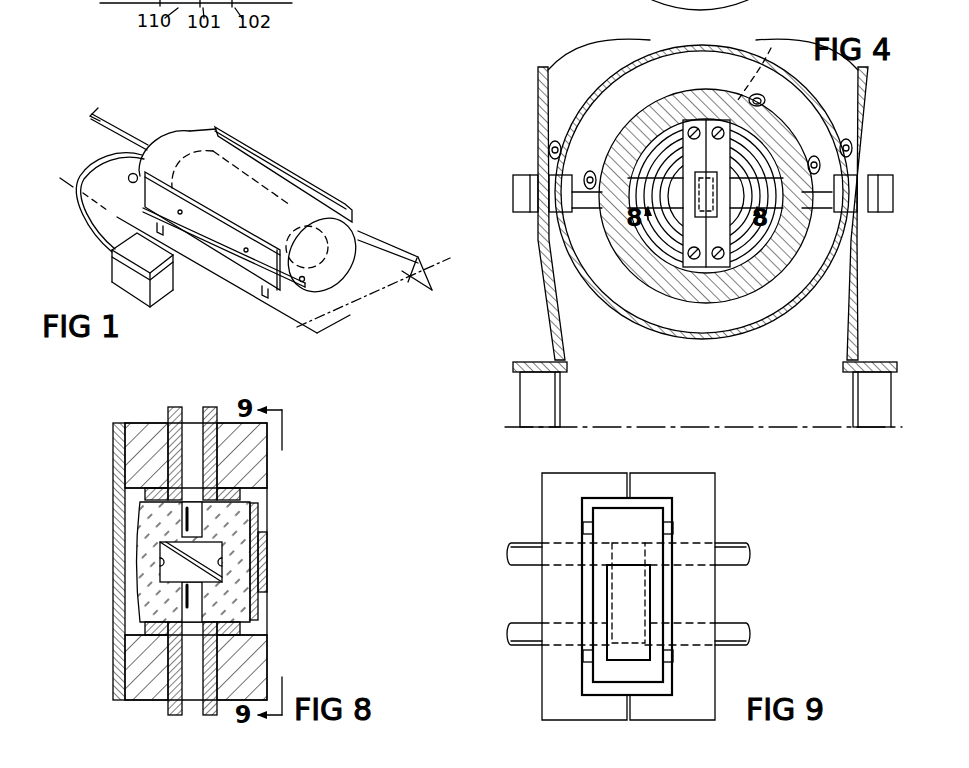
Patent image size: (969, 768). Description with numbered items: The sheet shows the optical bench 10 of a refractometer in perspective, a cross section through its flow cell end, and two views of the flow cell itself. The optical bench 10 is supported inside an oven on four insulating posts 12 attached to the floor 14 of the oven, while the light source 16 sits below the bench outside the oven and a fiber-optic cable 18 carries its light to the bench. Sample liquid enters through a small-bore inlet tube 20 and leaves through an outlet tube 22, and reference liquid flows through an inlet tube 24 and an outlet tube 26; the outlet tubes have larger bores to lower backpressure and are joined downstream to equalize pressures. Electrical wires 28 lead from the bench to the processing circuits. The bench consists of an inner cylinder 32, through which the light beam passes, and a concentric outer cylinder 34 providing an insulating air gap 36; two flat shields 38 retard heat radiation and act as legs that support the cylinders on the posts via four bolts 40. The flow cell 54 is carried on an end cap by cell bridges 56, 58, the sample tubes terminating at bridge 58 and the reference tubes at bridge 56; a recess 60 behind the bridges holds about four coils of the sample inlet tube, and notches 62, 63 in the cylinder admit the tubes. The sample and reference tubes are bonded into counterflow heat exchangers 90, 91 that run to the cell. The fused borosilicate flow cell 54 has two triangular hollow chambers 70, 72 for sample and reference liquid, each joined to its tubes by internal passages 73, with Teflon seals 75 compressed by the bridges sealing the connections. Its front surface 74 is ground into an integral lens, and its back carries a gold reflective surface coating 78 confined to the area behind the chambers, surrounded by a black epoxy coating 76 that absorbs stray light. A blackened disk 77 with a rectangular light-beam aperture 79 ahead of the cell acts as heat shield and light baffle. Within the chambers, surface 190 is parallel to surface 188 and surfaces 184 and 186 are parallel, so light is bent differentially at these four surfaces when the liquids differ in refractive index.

In FIG. 1, the optical bench 10 is at (302, 153).
In FIG. 1, the insulating posts 12 is at (262, 296).
In FIG. 4, the insulating posts 12 is at (558, 401).
In FIG. 1, the floor 14 is at (297, 330).
In FIG. 4, the floor 14 is at (668, 422).
In FIG. 1, the light source 16 is at (106, 280).
In FIG. 1, the fiber-optic cable 18 is at (76, 168).
In FIG. 1, the inlet tube 20 is at (337, 305).
In FIG. 4, the inlet tube 20 is at (848, 148).
In FIG. 8, the inlet tube 20 is at (170, 709).
In FIG. 9, the inlet tube 20 is at (520, 649).
In FIG. 1, the outlet tube 22 is at (322, 296).
In FIG. 4, the outlet tube 22 is at (737, 176).
In FIG. 9, the outlet tube 22 is at (520, 541).
In FIG. 1, the inlet tube 24 is at (407, 283).
In FIG. 4, the inlet tube 24 is at (549, 139).
In FIG. 8, the inlet tube 24 is at (168, 415).
In FIG. 9, the inlet tube 24 is at (742, 646).
In FIG. 1, the outlet tube 26 is at (421, 266).
In FIG. 4, the outlet tube 26 is at (550, 150).
In FIG. 9, the outlet tube 26 is at (745, 546).
In FIG. 1, the electrical wires 28 is at (108, 120).
In FIG. 1, the inner cylinder 32 is at (265, 190).
In FIG. 4, the inner cylinder 32 is at (705, 89).
In FIG. 1, the outer cylinder 34 is at (216, 128).
In FIG. 4, the outer cylinder 34 is at (688, 47).
In FIG. 4, the air gap 36 is at (684, 328).
In FIG. 1, the flat shields 38 is at (342, 200).
In FIG. 4, the flat shields 38 is at (560, 298).
In FIG. 1, the bolts 40 is at (242, 258).
In FIG. 4, the bolts 40 is at (560, 250).
In FIG. 4, the flow cell 54 is at (704, 122).
In FIG. 4, the cell bridge 56 is at (680, 254).
In FIG. 8, the cell bridge 56 is at (137, 441).
In FIG. 9, the cell bridge 56 is at (688, 474).
In FIG. 4, the cell bridge 58 is at (752, 269).
In FIG. 8, the cell bridge 58 is at (137, 686).
In FIG. 9, the cell bridge 58 is at (575, 476).
In FIG. 4, the recess 60 is at (660, 232).
In FIG. 4, the notch 62 is at (628, 204).
In FIG. 4, the notch 63 is at (761, 66).
In FIG. 8, the hollow chamber 70 is at (153, 571).
In FIG. 8, the hollow chamber 72 is at (228, 568).
In FIG. 9, the hollow chamber 72 is at (650, 602).
In FIG. 8, the internal passages 73 is at (186, 517).
In FIG. 9, the internal passages 73 is at (652, 538).
In FIG. 4, the front surface 74 is at (695, 191).
In FIG. 8, the front surface 74 is at (140, 543).
In FIG. 8, the Teflon seals 75 is at (240, 495).
In FIG. 9, the Teflon seals 75 is at (585, 534).
In FIG. 8, the black epoxy coating 76 is at (258, 516).
In FIG. 9, the black epoxy coating 76 is at (602, 524).
In FIG. 8, the blackened disk 77 is at (113, 656).
In FIG. 8, the reflective surface coating 78 is at (267, 541).
In FIG. 9, the reflective surface coating 78 is at (620, 654).
In FIG. 8, the light-beam aperture 79 is at (137, 576).
In FIG. 1, the sample counterflow heat exchanger 90 is at (128, 179).
In FIG. 4, the sample counterflow heat exchanger 90 is at (845, 139).
In FIG. 1, the reference counterflow heat exchanger 91 is at (372, 236).
In FIG. 4, the reference counterflow heat exchanger 91 is at (556, 141).
In FIG. 8, the surface 184 is at (158, 553).
In FIG. 8, the surface 186 is at (224, 555).
In FIG. 8, the surface 188 is at (224, 562).
In FIG. 8, the surface 190 is at (162, 563).